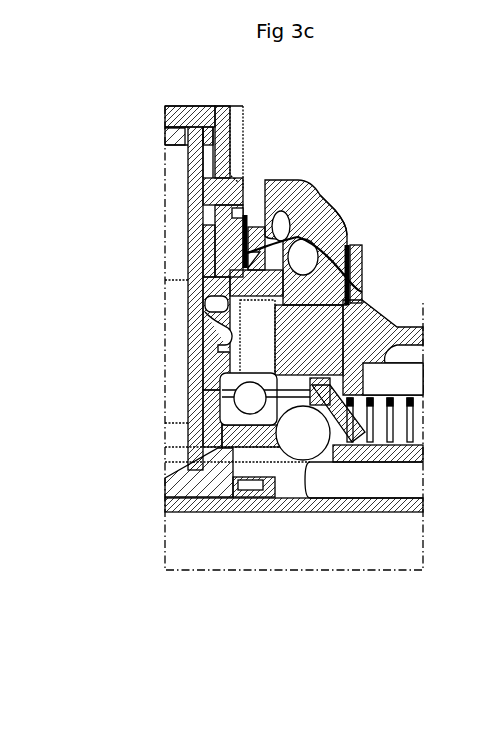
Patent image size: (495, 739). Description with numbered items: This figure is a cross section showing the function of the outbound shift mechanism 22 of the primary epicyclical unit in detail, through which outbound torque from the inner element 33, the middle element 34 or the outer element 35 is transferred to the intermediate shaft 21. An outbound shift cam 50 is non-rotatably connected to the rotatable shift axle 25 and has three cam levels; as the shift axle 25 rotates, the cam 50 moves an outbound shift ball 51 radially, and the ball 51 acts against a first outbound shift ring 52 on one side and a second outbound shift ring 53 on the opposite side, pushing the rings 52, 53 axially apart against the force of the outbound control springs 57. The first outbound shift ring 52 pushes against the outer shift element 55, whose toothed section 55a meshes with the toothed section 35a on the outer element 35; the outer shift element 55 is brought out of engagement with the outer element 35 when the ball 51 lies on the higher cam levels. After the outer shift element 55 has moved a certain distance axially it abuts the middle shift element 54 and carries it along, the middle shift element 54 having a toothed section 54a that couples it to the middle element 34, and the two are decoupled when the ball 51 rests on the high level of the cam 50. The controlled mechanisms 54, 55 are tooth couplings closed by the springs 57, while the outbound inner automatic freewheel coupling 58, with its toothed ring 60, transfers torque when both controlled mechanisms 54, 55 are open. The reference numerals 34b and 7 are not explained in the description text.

The outbound shift mechanism 22 is at (277, 112).
The outer element 35 is at (248, 194).
The toothed section 35a is at (245, 205).
The middle element 34 is at (205, 257).
The seal ring 34b is at (247, 253).
The inner element 33 is at (200, 342).
The outer shift element 55 is at (325, 218).
The toothed section 55a is at (268, 232).
The middle shift element 54 is at (298, 237).
The toothed section 54a is at (312, 193).
The outbound inner automatic freewheel coupling 58 is at (352, 271).
The toothed ring 60 is at (362, 292).
The intermediate shaft 21 is at (385, 355).
The outbound control springs 57 is at (385, 420).
The shaft 7 is at (400, 455).
The rotatable shift axle 25 is at (398, 503).
The second outbound shift ring 53 is at (232, 465).
The outbound shift cam 50 is at (292, 498).
The outbound shift balls 51 is at (330, 488).
The first outbound shift ring 52 is at (312, 447).